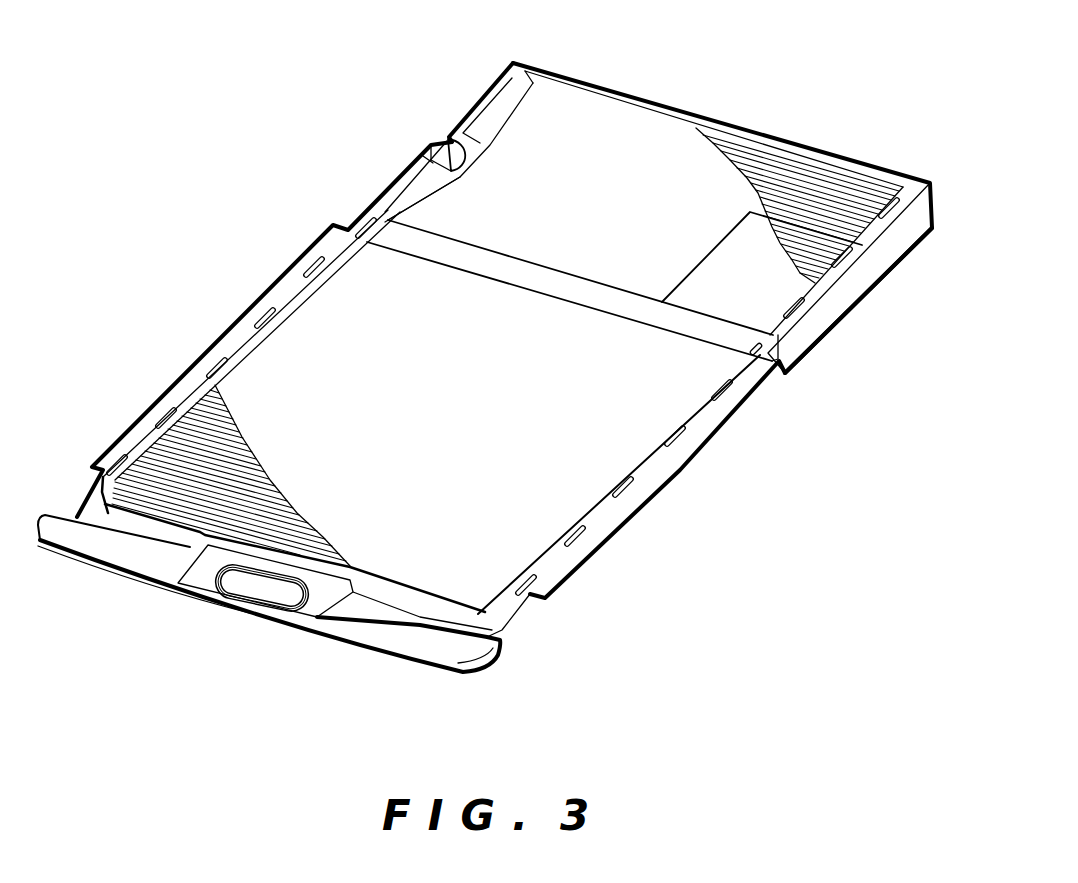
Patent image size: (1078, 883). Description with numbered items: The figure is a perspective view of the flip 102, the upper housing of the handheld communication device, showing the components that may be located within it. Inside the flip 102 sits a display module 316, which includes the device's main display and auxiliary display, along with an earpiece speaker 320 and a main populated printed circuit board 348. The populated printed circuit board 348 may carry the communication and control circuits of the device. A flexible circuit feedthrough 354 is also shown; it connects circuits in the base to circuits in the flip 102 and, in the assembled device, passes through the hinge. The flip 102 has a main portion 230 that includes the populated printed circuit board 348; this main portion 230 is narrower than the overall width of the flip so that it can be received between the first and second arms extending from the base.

The flip 102 is at (806, 120).
The main portion 230 is at (830, 312).
The display module 316 is at (443, 438).
The earpiece speaker 320 is at (252, 588).
The main populated printed circuit board 348 is at (572, 175).
The flexible circuit feedthrough 354 is at (438, 133).